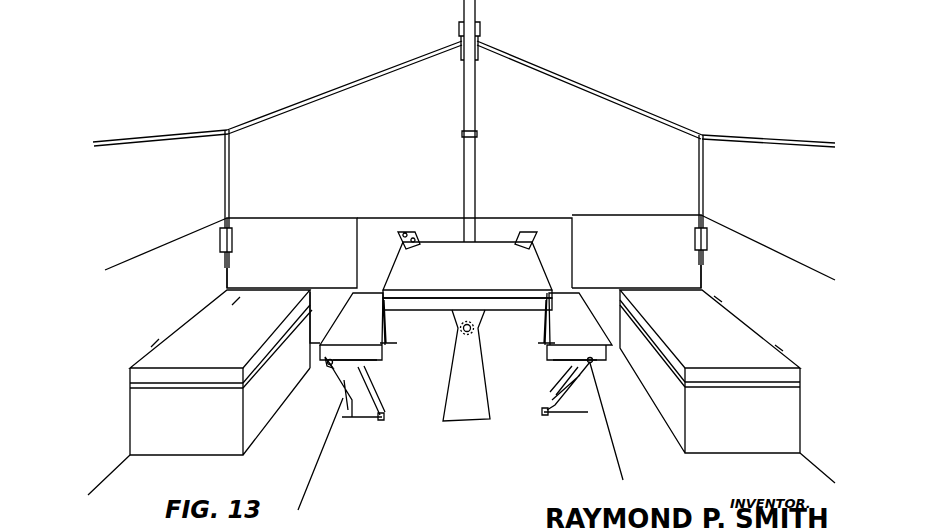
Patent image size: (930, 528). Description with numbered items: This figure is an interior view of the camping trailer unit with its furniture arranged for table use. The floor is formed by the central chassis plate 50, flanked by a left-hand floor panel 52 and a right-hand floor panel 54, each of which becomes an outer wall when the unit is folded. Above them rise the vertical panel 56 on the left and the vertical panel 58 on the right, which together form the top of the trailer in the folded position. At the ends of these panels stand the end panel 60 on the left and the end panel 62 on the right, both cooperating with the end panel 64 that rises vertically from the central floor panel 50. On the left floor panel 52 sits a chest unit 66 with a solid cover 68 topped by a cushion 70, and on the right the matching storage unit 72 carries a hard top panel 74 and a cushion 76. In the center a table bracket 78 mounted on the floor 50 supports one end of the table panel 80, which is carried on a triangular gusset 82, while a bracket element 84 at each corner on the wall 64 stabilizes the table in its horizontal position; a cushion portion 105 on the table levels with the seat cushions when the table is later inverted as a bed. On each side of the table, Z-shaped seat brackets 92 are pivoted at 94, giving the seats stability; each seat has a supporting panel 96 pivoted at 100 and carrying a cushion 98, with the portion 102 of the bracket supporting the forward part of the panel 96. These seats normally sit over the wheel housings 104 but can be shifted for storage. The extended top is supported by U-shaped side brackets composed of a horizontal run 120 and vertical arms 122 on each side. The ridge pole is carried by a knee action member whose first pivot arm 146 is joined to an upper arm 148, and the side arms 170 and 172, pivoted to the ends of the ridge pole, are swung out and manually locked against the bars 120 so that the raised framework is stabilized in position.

The chassis plate 50 is at (402, 475).
The left-hand floor panel 52 is at (268, 442).
The right-hand floor panel 54 is at (656, 446).
The vertical panel 56 is at (140, 265).
The vertical panel 58 is at (745, 288).
The end panel 60 is at (302, 212).
The end panel 62 is at (648, 222).
The end panel 64 is at (500, 218).
The chest unit 66 is at (152, 450).
The solid cover 68 is at (197, 385).
The cushion 70 is at (240, 350).
The storage unit 72 is at (708, 443).
The hard top panel 74 is at (715, 385).
The cushion 76 is at (720, 340).
The table bracket 78 is at (465, 414).
The table panel 80 is at (468, 277).
The triangular gusset 82 is at (474, 322).
The bracket element 84 is at (398, 240).
The seat brackets 92 is at (343, 420).
The pivot 94 is at (382, 420).
The supporting panel 96 is at (375, 361).
The cushion 98 is at (356, 305).
The pivot 100 is at (328, 364).
The portion of the bracket 102 is at (370, 388).
The wheel housings 104 is at (375, 398).
The cushion portion 105 is at (430, 300).
The horizontal run 120 is at (143, 140).
The vertical arms 122 is at (230, 173).
The first pivot arm 146 is at (476, 150).
The upper arm 148 is at (476, 80).
The side arm 170 is at (345, 95).
The side arm 172 is at (580, 90).